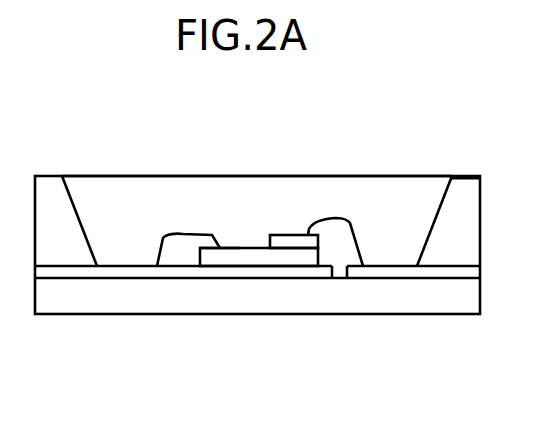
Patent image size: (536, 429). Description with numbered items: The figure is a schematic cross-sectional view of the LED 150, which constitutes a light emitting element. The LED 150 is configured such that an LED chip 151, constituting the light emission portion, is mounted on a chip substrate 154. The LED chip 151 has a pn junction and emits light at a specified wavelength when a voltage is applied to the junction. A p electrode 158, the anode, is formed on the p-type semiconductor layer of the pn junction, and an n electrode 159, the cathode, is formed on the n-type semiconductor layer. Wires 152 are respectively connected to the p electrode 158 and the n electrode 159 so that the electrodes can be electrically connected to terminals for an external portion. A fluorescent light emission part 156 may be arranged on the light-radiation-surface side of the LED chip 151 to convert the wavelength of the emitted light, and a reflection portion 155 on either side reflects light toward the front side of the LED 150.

The LED 150 is at (233, 322).
The LED chip 151 is at (250, 257).
The wires 152 is at (162, 237).
The chip substrate 154 is at (167, 293).
The reflection portion 155 is at (72, 195).
The fluorescent light emission part 156 is at (117, 213).
The p electrode 158 is at (277, 235).
The n electrode 159 is at (225, 248).